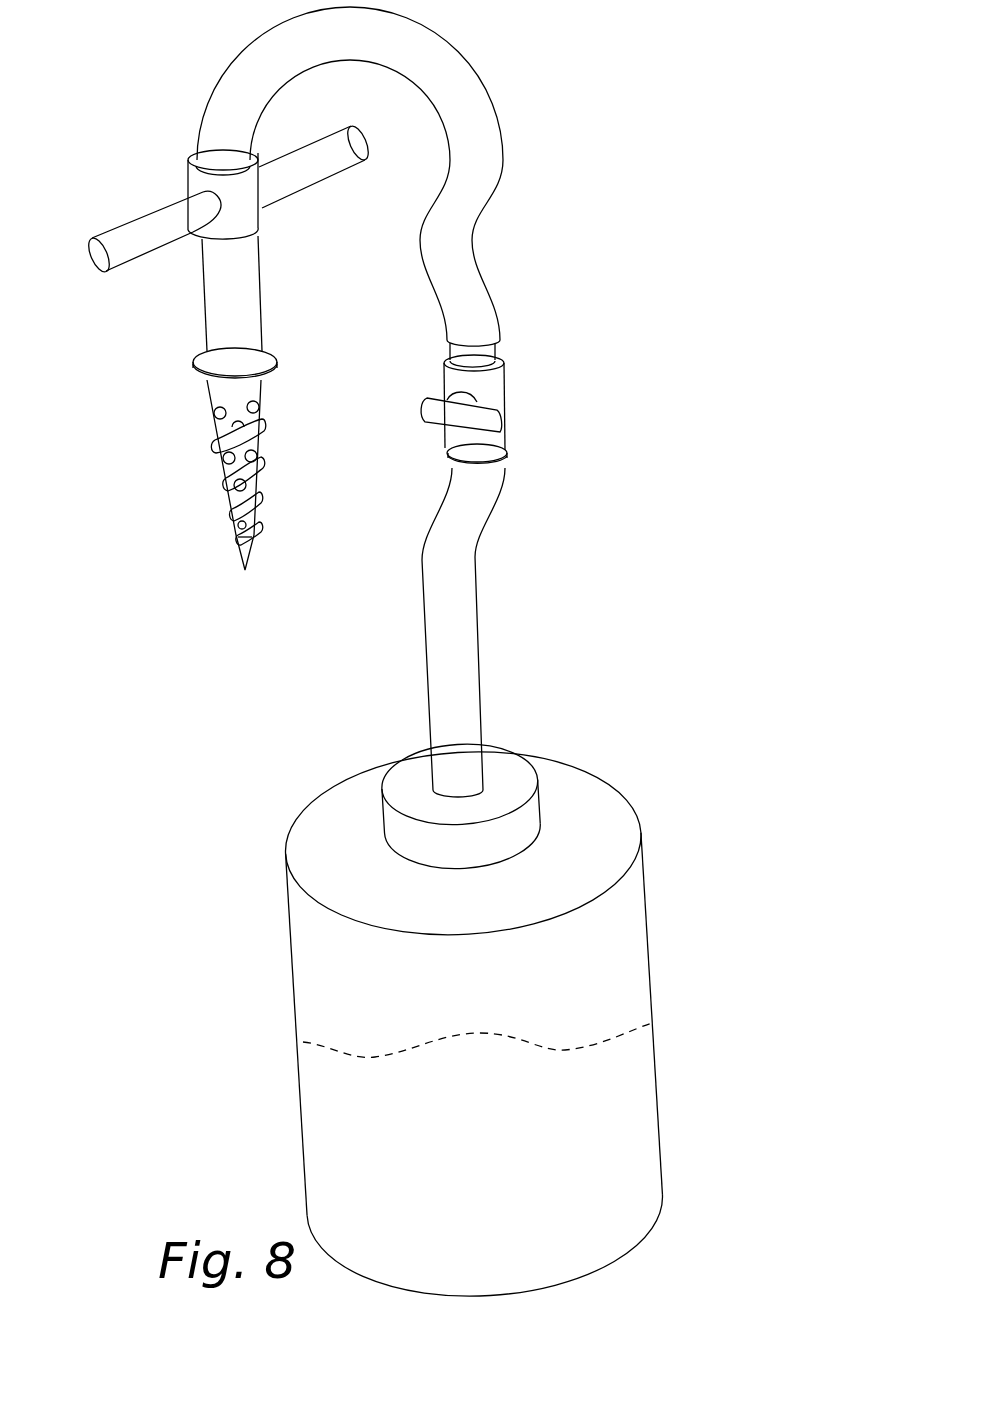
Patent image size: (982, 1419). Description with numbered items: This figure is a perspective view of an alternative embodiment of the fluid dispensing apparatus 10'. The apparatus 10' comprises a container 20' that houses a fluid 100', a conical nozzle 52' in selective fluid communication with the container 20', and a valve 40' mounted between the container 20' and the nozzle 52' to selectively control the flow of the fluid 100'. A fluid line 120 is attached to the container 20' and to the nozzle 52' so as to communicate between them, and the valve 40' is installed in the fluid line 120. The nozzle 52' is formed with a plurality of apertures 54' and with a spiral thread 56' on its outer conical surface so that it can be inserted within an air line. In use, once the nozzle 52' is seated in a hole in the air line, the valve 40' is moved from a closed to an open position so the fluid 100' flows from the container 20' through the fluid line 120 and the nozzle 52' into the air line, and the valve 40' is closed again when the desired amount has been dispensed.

The fluid dispensing apparatus 10' is at (203, 440).
The container 20' is at (402, 1020).
The valve 40' is at (522, 396).
The conical nozzle 52' is at (188, 475).
The apertures 54' is at (200, 486).
The spiral thread 56' is at (285, 465).
The fluid 100' is at (530, 1096).
The fluid line 120 is at (472, 208).